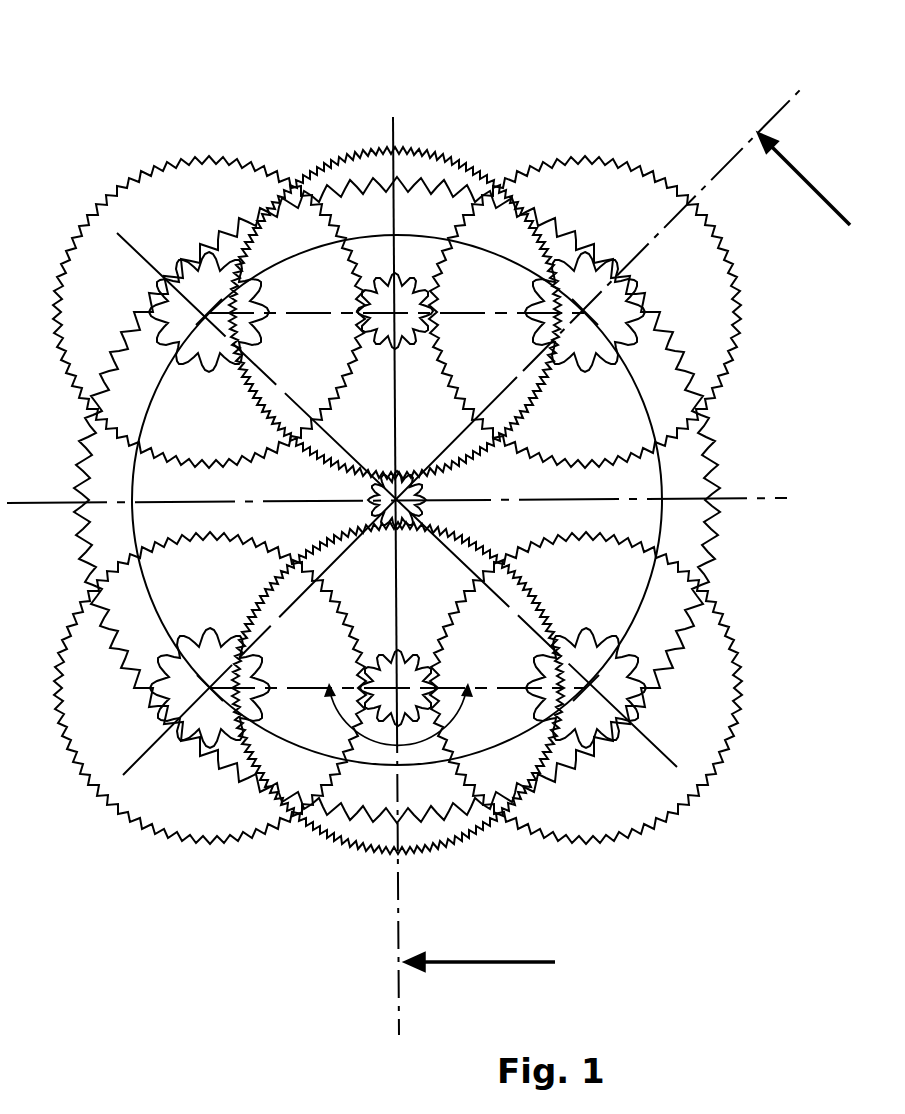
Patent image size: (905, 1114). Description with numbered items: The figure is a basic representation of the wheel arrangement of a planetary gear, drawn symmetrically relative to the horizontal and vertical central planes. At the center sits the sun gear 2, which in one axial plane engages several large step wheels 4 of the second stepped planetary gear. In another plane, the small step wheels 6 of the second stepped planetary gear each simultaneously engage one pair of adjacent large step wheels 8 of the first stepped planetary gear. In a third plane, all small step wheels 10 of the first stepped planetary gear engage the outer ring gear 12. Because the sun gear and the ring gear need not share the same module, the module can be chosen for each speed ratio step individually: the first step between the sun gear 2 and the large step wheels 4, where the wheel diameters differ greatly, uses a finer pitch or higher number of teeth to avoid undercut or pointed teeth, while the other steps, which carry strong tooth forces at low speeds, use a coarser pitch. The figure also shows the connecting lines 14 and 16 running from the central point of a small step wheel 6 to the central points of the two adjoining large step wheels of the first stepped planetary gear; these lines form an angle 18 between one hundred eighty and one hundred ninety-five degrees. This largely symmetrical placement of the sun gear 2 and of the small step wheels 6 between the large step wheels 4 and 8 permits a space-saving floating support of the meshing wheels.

The sun gear 2 is at (408, 497).
The large step wheel of the second stepped planetary gear 4 is at (335, 465).
The small step wheel of the second stepped planetary gear 6 is at (410, 273).
The large step wheel of the first stepped planetary gear 8 is at (580, 153).
The small step wheel of the first stepped planetary gear 10 is at (573, 267).
The ring gear 12 is at (723, 467).
The connecting line 14 is at (290, 690).
The connecting line 16 is at (513, 687).
The angle 18 is at (423, 740).